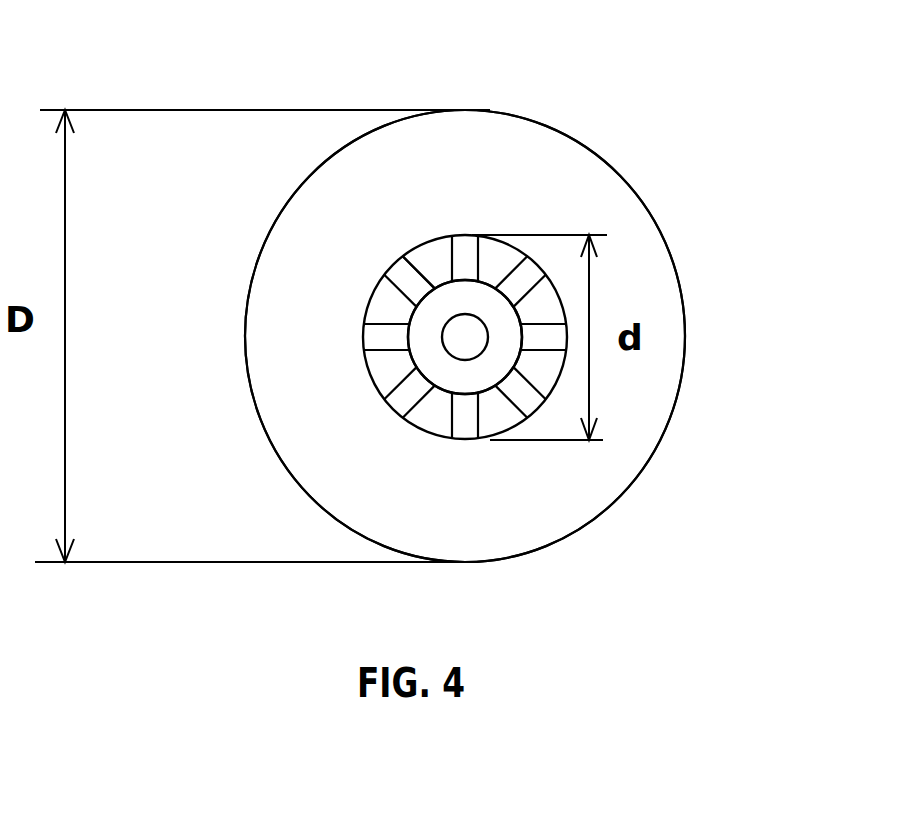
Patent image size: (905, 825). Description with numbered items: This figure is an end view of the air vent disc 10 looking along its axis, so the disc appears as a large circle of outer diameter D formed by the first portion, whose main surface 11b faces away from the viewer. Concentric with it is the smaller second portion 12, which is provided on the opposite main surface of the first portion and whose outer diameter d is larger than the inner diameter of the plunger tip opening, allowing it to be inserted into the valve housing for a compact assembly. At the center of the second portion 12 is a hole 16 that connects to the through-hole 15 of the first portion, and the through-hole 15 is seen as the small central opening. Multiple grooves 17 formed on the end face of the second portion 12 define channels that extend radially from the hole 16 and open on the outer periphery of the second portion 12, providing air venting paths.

The air vent disc 10 is at (650, 103).
The main surface 11b is at (565, 513).
The second portion 12 is at (385, 375).
The through-hole 15 is at (452, 321).
The hole 16 is at (433, 385).
The grooves 17 is at (370, 330).